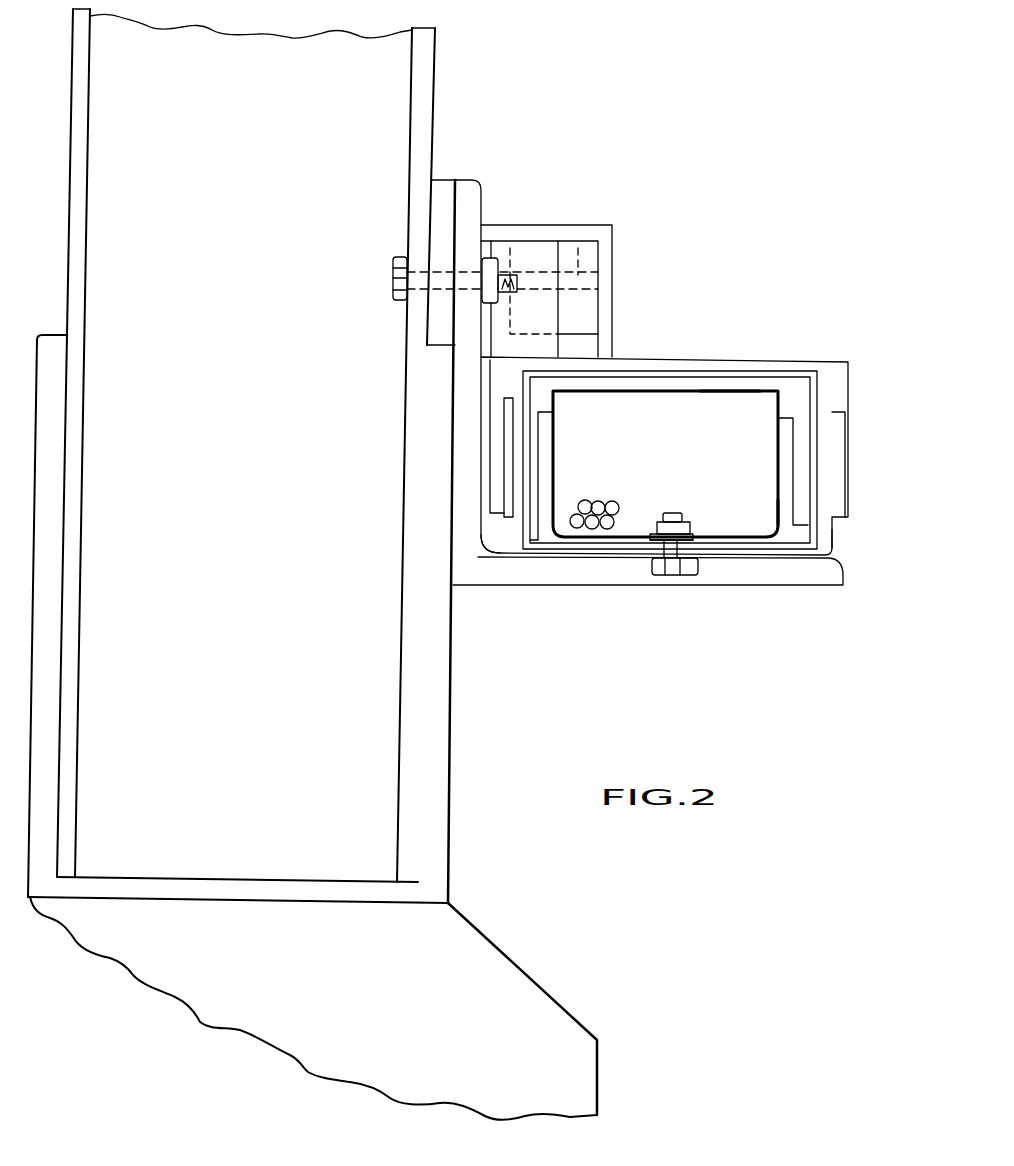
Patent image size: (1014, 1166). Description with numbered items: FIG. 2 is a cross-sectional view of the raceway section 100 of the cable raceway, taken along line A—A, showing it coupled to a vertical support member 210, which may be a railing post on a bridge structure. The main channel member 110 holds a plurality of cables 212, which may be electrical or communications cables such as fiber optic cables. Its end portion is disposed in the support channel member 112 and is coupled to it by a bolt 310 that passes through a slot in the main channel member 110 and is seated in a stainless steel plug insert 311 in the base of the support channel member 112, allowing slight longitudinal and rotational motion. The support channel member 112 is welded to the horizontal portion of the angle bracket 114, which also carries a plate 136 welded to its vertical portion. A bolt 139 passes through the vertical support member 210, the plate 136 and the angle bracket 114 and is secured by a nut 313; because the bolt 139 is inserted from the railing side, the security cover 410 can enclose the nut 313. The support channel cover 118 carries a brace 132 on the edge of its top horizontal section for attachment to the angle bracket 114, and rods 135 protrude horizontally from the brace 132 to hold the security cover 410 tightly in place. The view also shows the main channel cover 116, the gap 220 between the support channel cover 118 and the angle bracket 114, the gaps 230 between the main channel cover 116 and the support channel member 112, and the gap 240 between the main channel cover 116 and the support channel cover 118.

The raceway section 100 is at (762, 186).
The main channel member 110 is at (777, 508).
The support channel member 112 is at (830, 540).
The angle bracket 114 is at (553, 585).
The main channel cover 116 is at (725, 398).
The support channel cover 118 is at (622, 356).
The brace 132 is at (522, 248).
The rods 135 is at (578, 267).
The plate 136 is at (447, 185).
The bolts 139 is at (393, 273).
The vertical support member 210 is at (433, 82).
The cables 212 is at (598, 500).
The gap 220 is at (487, 548).
The gaps 230 is at (535, 433).
The gap 240 is at (812, 360).
The bolts 310 is at (673, 573).
The plug inserts 311 is at (695, 562).
The nuts 313 is at (490, 257).
The security cover 410 is at (622, 270).